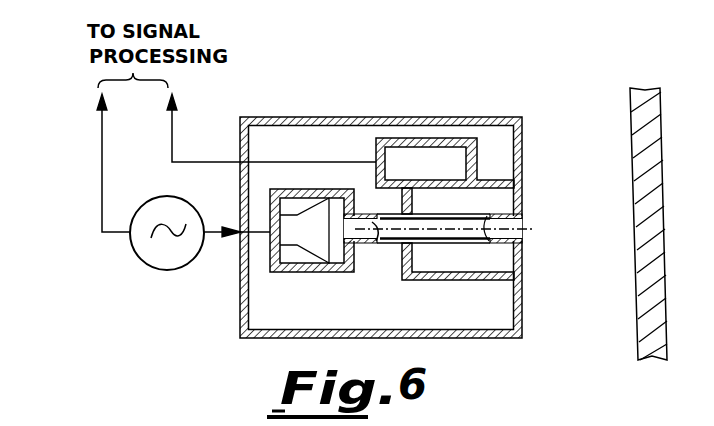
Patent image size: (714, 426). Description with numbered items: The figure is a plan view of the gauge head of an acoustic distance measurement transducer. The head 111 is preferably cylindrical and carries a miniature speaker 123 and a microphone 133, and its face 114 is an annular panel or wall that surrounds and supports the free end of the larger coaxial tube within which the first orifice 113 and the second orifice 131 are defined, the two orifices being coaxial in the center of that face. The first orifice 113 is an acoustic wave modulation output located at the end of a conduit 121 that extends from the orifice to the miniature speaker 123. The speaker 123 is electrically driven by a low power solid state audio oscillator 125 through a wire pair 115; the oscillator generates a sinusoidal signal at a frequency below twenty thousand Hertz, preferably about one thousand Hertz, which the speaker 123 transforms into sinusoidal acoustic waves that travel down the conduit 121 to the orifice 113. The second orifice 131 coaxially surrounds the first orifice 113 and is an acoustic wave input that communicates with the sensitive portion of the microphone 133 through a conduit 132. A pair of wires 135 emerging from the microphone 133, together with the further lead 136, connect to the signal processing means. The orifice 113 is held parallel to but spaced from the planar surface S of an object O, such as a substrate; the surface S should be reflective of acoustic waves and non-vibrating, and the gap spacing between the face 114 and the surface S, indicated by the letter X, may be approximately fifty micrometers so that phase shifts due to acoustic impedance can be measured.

The head 111 is at (398, 84).
The first orifice 113 is at (523, 226).
The face 114 is at (522, 300).
The wire pair 115 is at (215, 236).
The conduit 121 is at (508, 244).
The miniature speaker 123 is at (340, 273).
The audio oscillator 125 is at (142, 263).
The second orifice 131 is at (503, 207).
The conduit 132 is at (522, 188).
The microphone 133 is at (463, 138).
The pair of wires 135 is at (172, 146).
The reference output lead 136 is at (102, 162).
The object O is at (643, 87).
The surface S is at (628, 133).
The gap spacing X is at (637, 324).